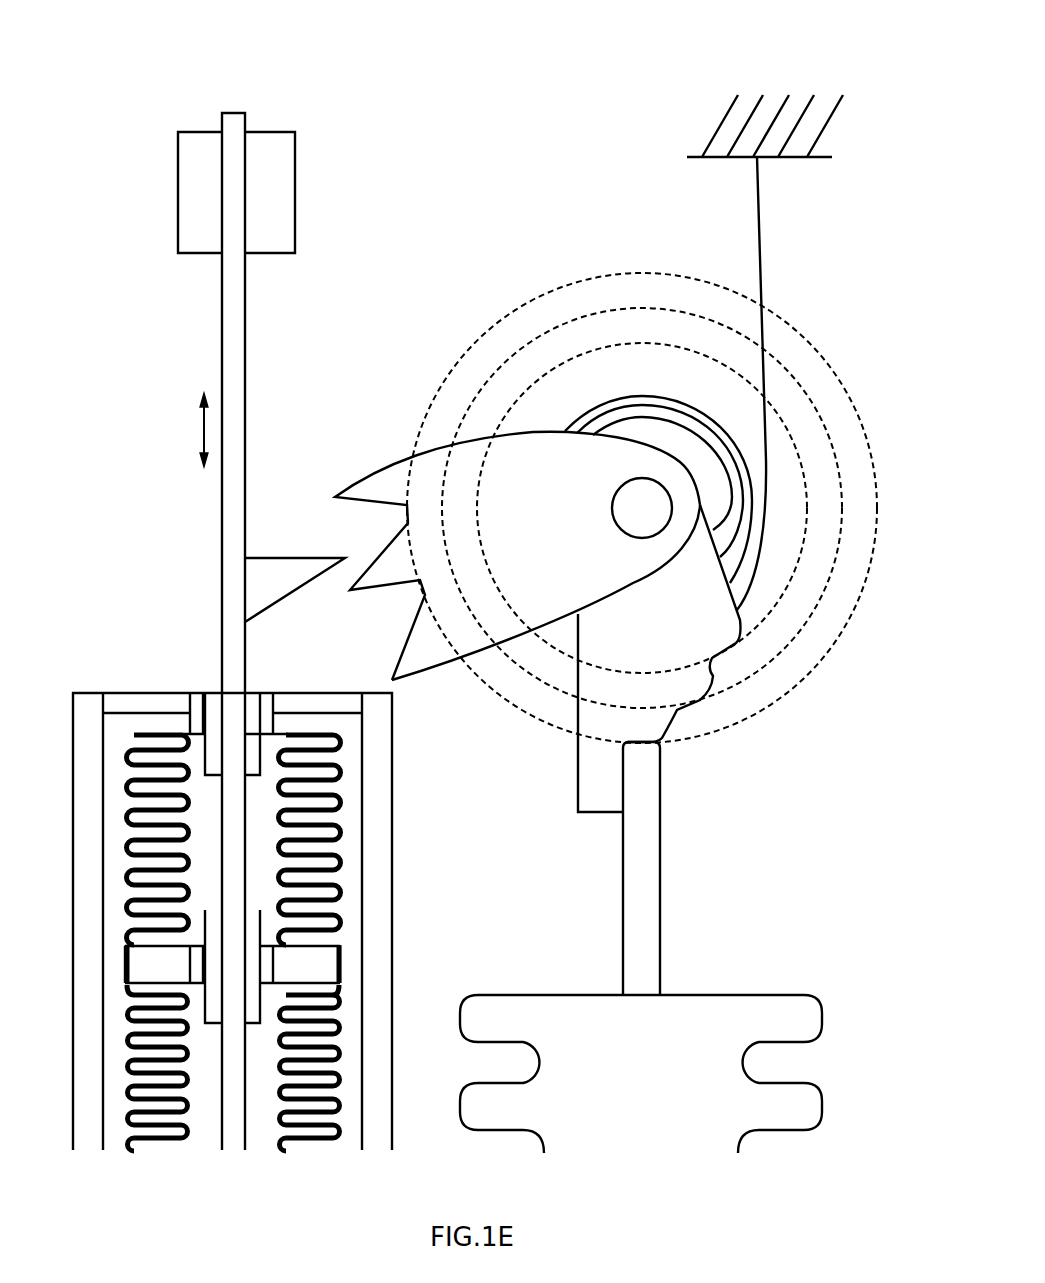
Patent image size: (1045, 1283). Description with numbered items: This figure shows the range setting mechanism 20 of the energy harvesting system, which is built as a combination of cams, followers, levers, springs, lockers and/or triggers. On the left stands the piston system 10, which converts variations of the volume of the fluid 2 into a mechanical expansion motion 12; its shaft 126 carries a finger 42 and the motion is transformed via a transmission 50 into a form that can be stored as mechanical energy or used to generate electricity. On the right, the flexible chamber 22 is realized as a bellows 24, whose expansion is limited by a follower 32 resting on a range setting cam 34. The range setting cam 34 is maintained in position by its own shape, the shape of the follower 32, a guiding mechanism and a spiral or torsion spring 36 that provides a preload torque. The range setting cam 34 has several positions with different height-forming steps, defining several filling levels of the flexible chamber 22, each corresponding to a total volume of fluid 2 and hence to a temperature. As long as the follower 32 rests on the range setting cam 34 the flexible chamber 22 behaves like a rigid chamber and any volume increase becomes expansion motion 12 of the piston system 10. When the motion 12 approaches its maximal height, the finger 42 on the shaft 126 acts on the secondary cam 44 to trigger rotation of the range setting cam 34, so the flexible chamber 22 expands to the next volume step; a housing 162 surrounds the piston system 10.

The range setting mechanism 20 is at (278, 45).
The transmission 50 is at (195, 188).
The mechanical expansion motion 12 is at (200, 432).
The finger 42 is at (287, 560).
The shaft 126 is at (230, 522).
The piston system 10 is at (151, 648).
The housing 162 is at (398, 745).
The fluid 2 is at (345, 877).
The secondary cam 44 is at (470, 455).
The spiral or torsion spring 36 is at (765, 340).
The range setting cam 34 is at (697, 683).
The follower 32 is at (645, 893).
The bellows 24 is at (832, 1018).
The flexible chamber 22 is at (705, 1060).